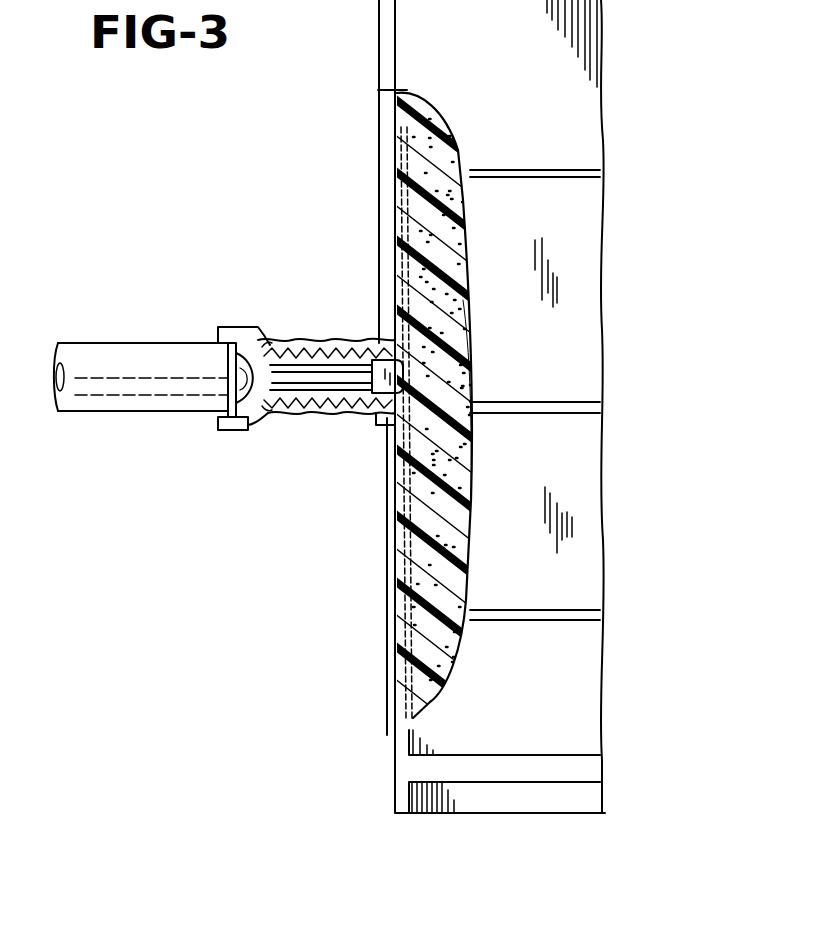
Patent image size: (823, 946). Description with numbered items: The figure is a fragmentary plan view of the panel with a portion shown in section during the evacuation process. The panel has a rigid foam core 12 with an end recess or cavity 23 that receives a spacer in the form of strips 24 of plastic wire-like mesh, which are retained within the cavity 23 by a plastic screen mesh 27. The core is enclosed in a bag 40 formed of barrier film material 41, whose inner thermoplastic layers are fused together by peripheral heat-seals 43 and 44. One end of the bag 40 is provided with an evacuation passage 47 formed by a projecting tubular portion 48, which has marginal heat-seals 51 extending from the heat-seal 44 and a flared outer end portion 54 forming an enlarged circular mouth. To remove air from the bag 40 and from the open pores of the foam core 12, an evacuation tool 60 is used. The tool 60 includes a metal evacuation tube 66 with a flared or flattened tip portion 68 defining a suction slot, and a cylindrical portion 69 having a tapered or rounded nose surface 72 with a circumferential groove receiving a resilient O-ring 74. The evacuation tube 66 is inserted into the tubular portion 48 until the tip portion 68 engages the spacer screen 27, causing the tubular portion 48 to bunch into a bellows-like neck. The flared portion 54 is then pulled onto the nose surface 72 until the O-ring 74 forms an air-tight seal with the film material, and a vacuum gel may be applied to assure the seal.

The foam core 12 is at (468, 325).
The cavity 23 is at (430, 452).
The strips 24 is at (435, 203).
The plastic screen mesh 27 is at (392, 160).
The bag 40 is at (620, 83).
The barrier film material 41 is at (585, 666).
The peripheral heat-seal 43 is at (580, 768).
The peripheral heat-seal 44 is at (383, 41).
The evacuation passage 47 is at (326, 415).
The tubular portion 48 is at (298, 415).
The marginal heat-seals 51 is at (328, 345).
The flared outer end portion 54 is at (250, 428).
The evacuation tool 60 is at (134, 336).
The evacuation tube 66 is at (346, 345).
The flared tip portion 68 is at (408, 373).
The cylindrical portion 69 is at (96, 400).
The nose surface 72 is at (260, 346).
The O-ring 74 is at (187, 348).